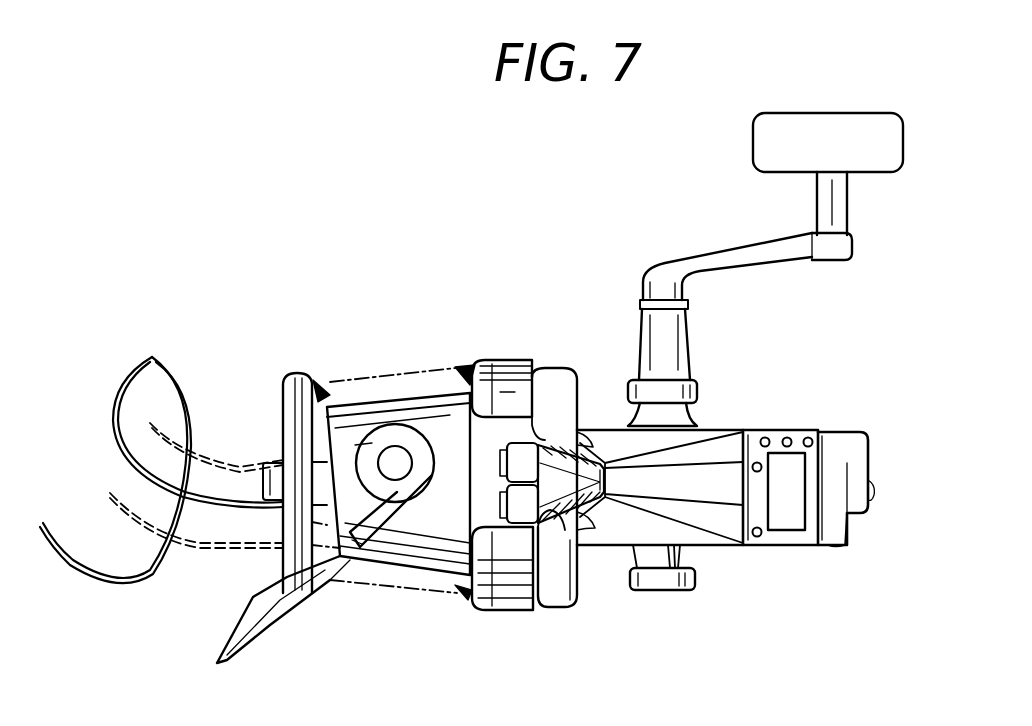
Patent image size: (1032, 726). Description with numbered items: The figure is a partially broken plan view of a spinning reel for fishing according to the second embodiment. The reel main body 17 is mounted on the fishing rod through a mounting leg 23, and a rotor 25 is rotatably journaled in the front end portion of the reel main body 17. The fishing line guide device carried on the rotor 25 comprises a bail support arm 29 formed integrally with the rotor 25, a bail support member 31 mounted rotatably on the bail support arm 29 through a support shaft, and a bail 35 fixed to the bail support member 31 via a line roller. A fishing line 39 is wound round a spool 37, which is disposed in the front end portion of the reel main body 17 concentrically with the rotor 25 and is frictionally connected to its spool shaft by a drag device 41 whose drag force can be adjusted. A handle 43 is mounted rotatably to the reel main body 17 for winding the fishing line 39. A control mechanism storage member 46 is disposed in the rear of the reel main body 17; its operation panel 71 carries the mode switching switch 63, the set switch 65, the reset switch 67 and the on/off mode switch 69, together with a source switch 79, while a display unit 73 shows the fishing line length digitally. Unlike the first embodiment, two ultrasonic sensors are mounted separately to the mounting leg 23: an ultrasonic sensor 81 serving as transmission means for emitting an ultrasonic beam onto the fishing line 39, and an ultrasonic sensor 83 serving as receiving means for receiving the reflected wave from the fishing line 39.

The reel main body 17 is at (706, 430).
The mounting leg 23 is at (575, 440).
The rotor 25 is at (570, 605).
The bail support arm 29 is at (480, 390).
The bail support member 31 is at (380, 545).
The bail 35 is at (268, 620).
The spool 37 is at (382, 410).
The fishing line 39 is at (152, 345).
The drag device 41 is at (283, 440).
The handle 43 is at (716, 245).
The control mechanism storage member 46 is at (805, 545).
The mode switching switch 63 is at (755, 462).
The set switch 65 is at (766, 437).
The reset switch 67 is at (789, 437).
The on/off mode switch 69 is at (812, 437).
The operation panel 71 is at (828, 540).
The display unit 73 is at (788, 530).
The source switch 79 is at (757, 537).
The ultrasonic sensor 81 is at (522, 455).
The ultrasonic sensor 83 is at (528, 498).